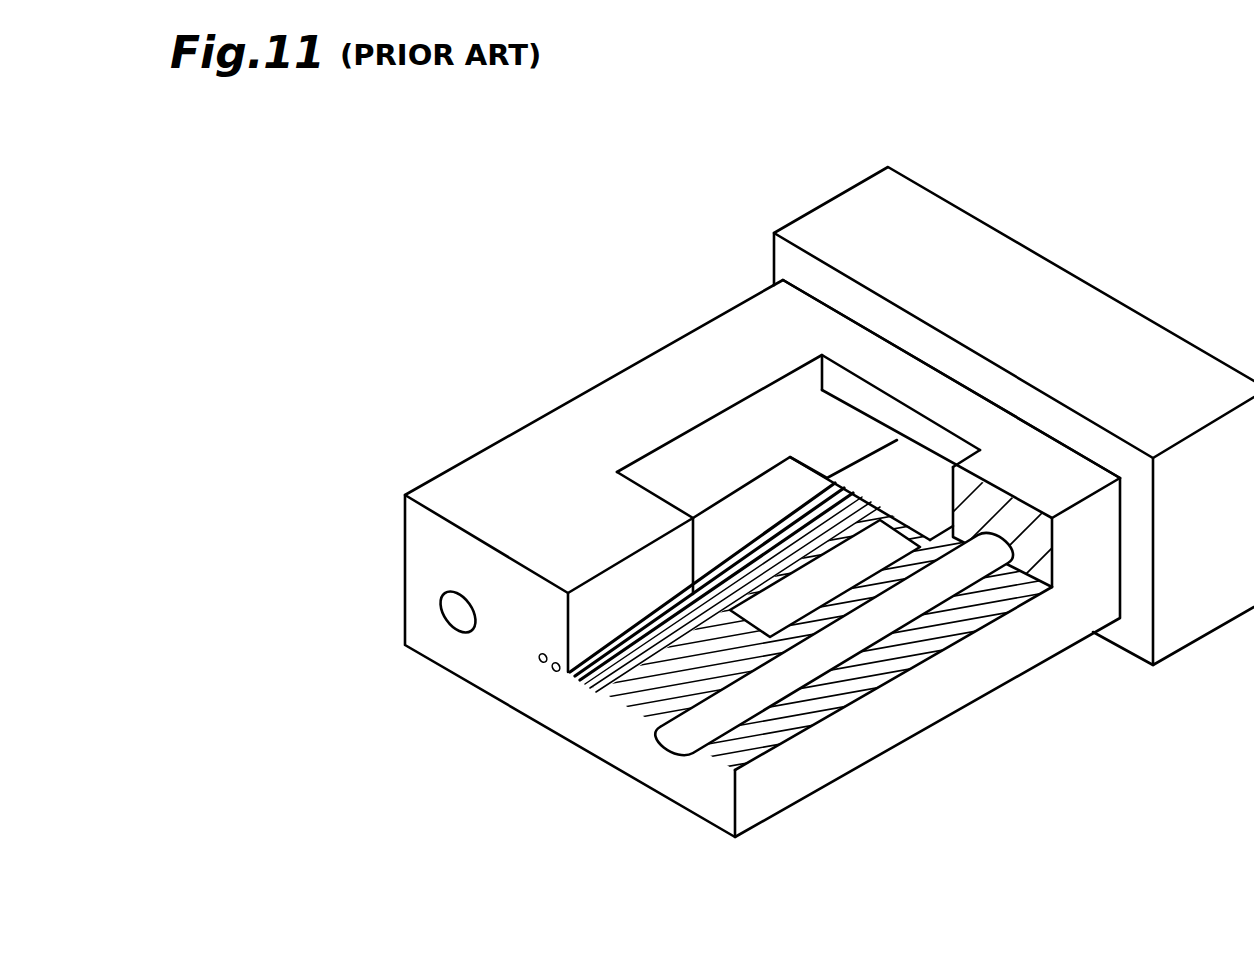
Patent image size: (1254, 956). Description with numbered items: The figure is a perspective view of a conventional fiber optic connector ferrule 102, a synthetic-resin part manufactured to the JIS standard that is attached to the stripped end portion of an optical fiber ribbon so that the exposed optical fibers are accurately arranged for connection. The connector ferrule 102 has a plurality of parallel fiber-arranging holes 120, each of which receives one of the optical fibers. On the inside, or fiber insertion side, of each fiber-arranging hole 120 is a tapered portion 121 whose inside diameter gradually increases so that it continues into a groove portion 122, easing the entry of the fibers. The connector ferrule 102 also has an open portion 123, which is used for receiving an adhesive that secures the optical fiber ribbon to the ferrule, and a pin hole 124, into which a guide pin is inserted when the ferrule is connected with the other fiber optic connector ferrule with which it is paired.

The fiber optic connector ferrule 102 is at (1025, 213).
The fiber-arranging holes 120 is at (622, 648).
The tapered portion 121 is at (688, 615).
The groove portion 122 is at (818, 537).
The open portion 123 is at (693, 447).
The pin hole 124 is at (455, 613).